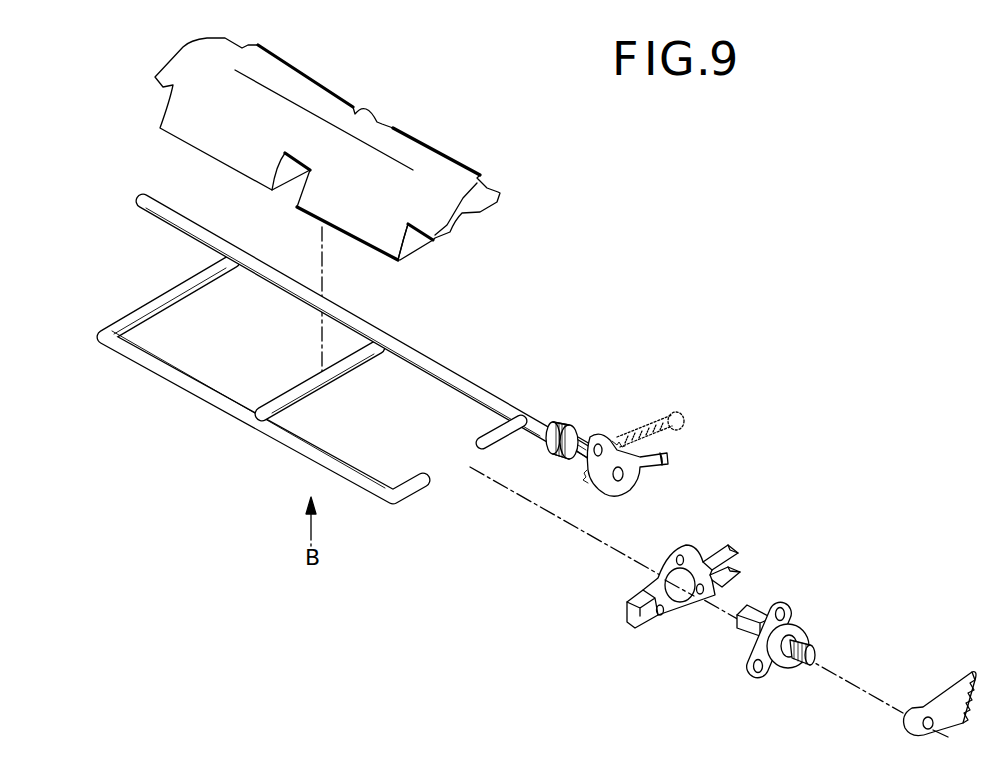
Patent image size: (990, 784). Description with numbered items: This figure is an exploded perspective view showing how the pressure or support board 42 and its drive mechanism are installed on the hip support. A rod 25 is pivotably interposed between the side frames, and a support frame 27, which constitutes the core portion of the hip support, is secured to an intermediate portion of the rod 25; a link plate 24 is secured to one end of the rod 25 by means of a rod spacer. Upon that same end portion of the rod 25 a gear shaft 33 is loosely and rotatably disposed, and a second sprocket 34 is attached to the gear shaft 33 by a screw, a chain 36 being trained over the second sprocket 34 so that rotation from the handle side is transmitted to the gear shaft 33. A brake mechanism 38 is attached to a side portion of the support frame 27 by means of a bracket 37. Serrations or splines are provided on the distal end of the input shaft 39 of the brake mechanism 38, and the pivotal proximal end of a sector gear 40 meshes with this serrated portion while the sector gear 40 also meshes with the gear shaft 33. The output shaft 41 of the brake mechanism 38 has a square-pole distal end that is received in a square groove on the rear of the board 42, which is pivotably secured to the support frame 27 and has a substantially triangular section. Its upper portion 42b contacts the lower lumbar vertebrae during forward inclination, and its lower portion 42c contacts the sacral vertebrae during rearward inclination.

The link plate 24 is at (635, 477).
The rod 25 is at (410, 350).
The support frame 27 is at (207, 403).
The gear shaft 33 is at (562, 418).
The second sprocket 34 is at (615, 440).
The chain 36 is at (657, 413).
The bracket 37 is at (690, 545).
The brake mechanism 38 is at (787, 610).
The input shaft 39 is at (807, 640).
The sector gear 40 is at (938, 703).
The output shaft 41 is at (750, 610).
The pressure or support board 42 is at (457, 180).
The upper portion 42b is at (427, 157).
The lower portion 42c is at (378, 212).